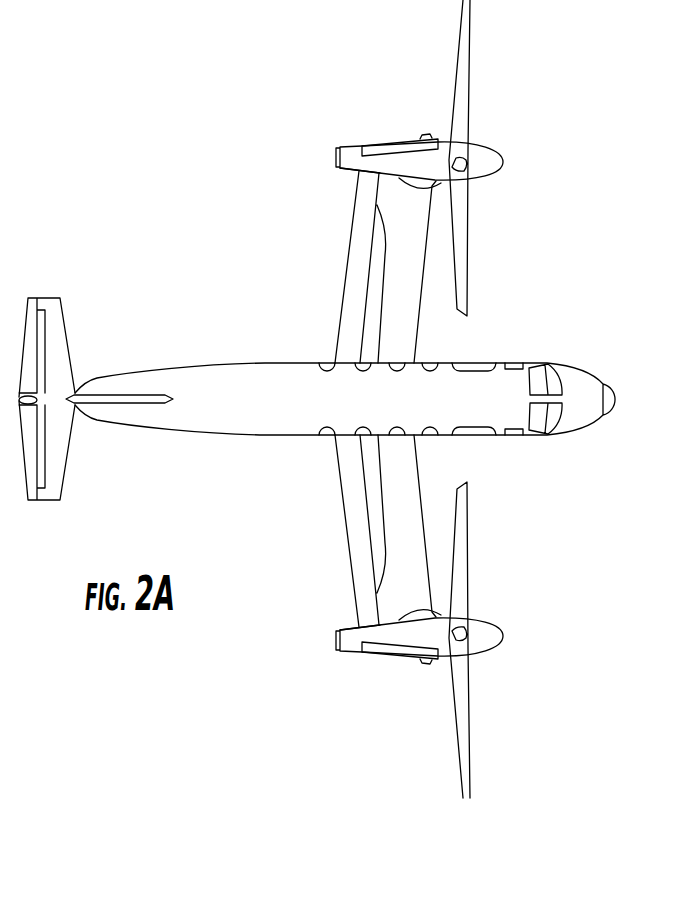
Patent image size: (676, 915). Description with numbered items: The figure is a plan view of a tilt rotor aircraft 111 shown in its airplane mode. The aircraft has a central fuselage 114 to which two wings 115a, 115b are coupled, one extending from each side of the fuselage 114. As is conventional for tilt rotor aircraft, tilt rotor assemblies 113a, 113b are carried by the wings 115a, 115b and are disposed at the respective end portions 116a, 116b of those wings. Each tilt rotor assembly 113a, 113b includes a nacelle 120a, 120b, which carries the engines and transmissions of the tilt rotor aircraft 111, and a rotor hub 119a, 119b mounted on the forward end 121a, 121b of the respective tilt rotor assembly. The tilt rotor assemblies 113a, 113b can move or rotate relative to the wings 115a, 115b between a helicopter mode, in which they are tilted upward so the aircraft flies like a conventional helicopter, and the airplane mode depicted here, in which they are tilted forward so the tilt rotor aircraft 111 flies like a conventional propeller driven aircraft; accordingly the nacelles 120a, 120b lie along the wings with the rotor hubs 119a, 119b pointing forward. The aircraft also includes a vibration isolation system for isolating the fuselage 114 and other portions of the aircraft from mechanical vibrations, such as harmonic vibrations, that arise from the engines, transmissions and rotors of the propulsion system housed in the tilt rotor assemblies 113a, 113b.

The tilt rotor aircraft 111 is at (317, 399).
The fuselage 114 is at (250, 434).
The wing 115a is at (349, 262).
The wing 115b is at (349, 536).
The end portion of wing 116a is at (344, 191).
The end portion of wing 116b is at (344, 607).
The nacelle 120a is at (342, 147).
The nacelle 120b is at (342, 651).
The tilt rotor assembly 113a is at (348, 126).
The tilt rotor assembly 113b is at (350, 668).
The rotor hub 119a is at (495, 150).
The rotor hub 119b is at (495, 647).
The forward end of tilt rotor assembly 121a is at (441, 186).
The forward end of tilt rotor assembly 121b is at (441, 612).